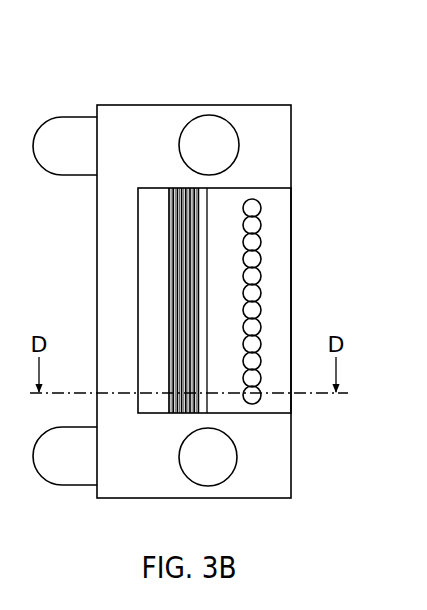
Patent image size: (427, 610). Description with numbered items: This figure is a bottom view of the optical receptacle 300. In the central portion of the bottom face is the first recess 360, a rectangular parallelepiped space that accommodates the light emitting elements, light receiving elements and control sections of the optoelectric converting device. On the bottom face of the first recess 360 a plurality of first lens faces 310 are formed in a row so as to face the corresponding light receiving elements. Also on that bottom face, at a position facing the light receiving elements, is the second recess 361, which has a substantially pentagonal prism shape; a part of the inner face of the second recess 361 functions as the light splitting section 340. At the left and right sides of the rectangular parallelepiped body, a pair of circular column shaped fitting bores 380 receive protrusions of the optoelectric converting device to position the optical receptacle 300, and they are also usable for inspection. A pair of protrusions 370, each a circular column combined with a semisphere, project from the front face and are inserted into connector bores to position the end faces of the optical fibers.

The optical receptacle 300 is at (293, 77).
The first lens face 310 is at (254, 277).
The light splitting section 340 is at (172, 305).
The first recess 360 is at (157, 225).
The second recess 361 is at (186, 271).
The protrusion 370 is at (65, 125).
The fitting bore 380 is at (210, 126).